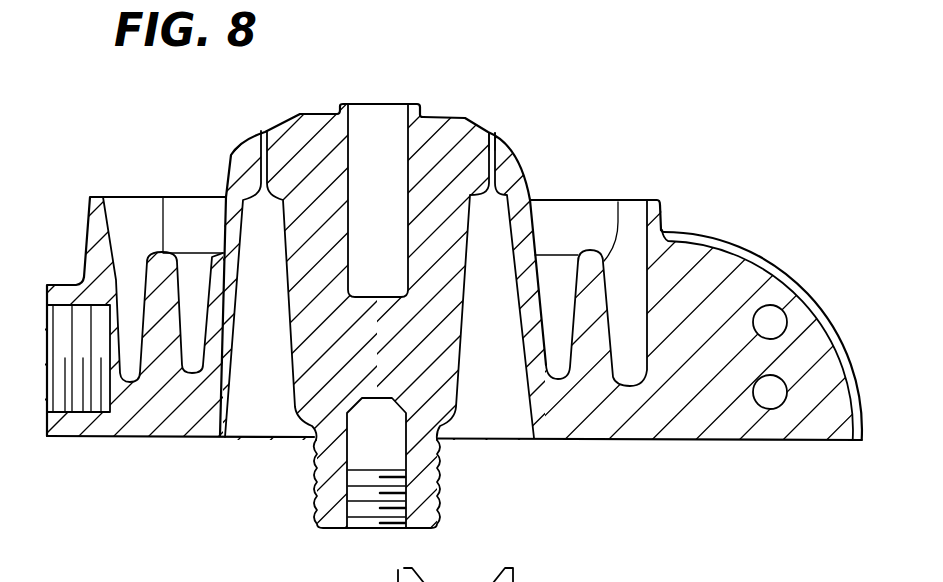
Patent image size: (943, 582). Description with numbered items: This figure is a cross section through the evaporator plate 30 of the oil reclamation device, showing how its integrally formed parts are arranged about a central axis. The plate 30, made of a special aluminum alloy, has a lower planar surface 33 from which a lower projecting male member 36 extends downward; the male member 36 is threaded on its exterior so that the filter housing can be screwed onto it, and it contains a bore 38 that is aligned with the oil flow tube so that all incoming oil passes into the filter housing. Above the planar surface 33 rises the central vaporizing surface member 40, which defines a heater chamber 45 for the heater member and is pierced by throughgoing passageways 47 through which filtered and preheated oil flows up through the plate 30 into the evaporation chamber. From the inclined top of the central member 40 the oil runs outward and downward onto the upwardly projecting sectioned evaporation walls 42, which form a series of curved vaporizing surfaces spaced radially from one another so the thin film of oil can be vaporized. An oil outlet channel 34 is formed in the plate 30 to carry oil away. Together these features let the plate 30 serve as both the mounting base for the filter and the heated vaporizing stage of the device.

The evaporator plate 30 is at (681, 137).
The lower planar surface 33 is at (149, 438).
The oil outlet channel 34 is at (47, 347).
The lower projecting male member 36 is at (438, 500).
The bore 38 is at (368, 528).
The central vaporizing surface member 40 is at (461, 118).
The evaporation walls 42 is at (618, 202).
The heater chamber 45 is at (371, 116).
The passageways 47 is at (492, 136).